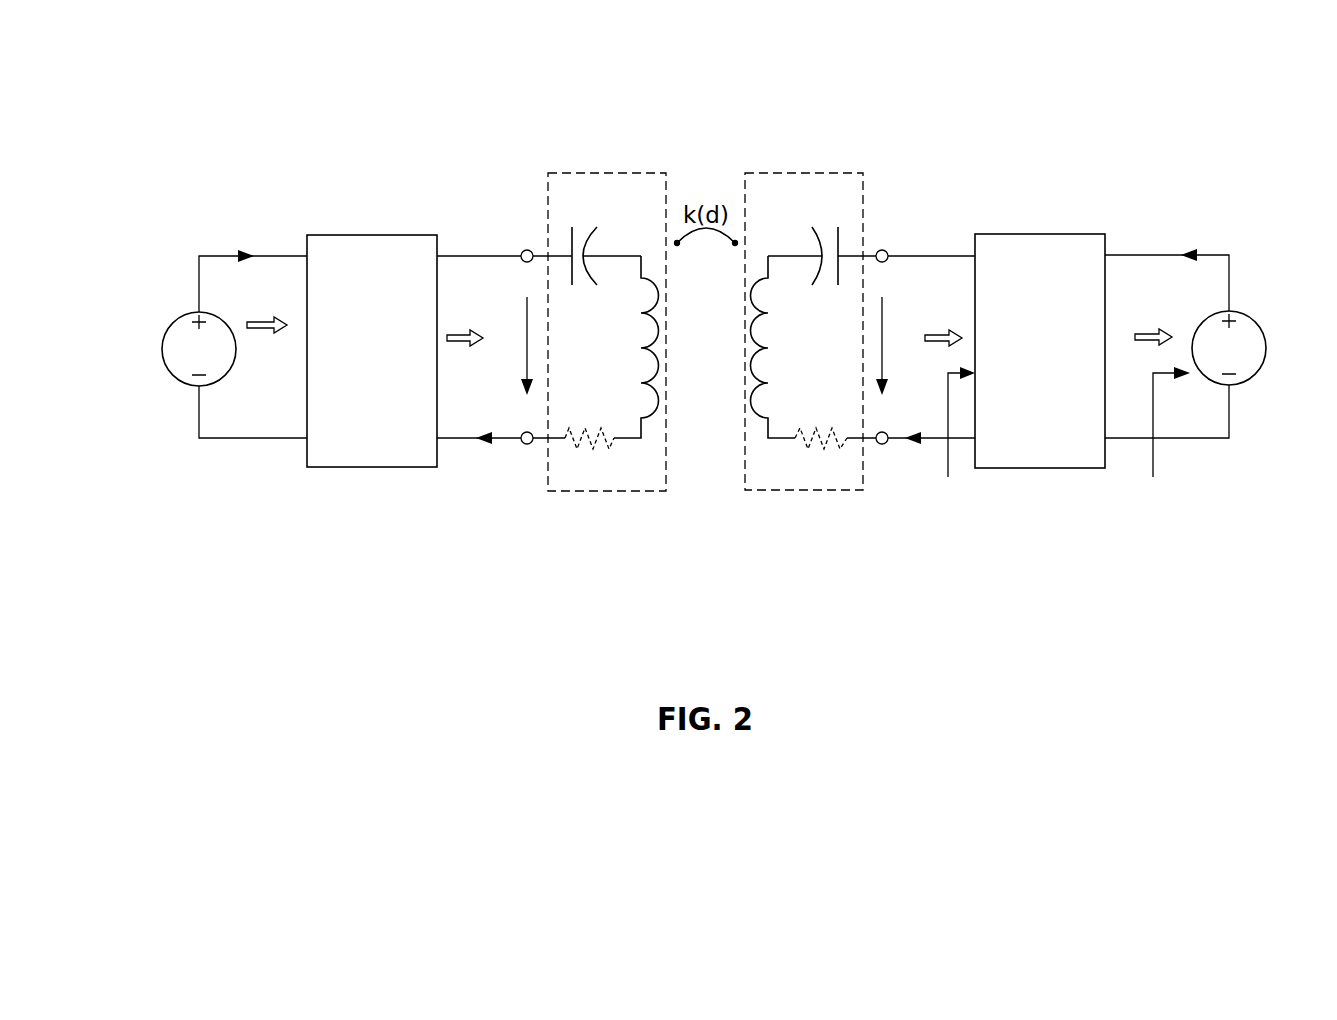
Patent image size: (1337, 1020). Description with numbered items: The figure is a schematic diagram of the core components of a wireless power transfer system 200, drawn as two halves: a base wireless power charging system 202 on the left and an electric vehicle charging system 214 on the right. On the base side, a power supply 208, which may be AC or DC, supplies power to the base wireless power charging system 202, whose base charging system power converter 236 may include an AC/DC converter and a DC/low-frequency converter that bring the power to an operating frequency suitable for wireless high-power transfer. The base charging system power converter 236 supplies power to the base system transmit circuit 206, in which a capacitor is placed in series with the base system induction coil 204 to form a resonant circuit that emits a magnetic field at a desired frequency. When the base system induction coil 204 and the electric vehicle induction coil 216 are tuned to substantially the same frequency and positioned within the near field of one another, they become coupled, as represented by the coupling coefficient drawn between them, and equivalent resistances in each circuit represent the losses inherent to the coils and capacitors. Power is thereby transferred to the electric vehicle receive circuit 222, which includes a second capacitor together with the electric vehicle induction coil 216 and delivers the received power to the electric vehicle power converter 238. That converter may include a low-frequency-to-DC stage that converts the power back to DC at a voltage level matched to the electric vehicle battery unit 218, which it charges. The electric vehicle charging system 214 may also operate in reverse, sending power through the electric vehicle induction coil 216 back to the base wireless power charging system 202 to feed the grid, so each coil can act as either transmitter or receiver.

The wireless power transfer system 200 is at (1068, 80).
The base wireless power charging system 202 is at (640, 527).
The base system induction coil 204 is at (657, 401).
The base system transmit circuit 206 is at (566, 172).
The power supply 208 is at (183, 318).
The electric vehicle charging system 214 is at (1243, 513).
The electric vehicle induction coil 216 is at (753, 332).
The electric vehicle battery unit 218 is at (1241, 311).
The electric vehicle receive circuit 222 is at (770, 172).
The base charging system power converter 236 is at (370, 235).
The electric vehicle power converter 238 is at (990, 234).